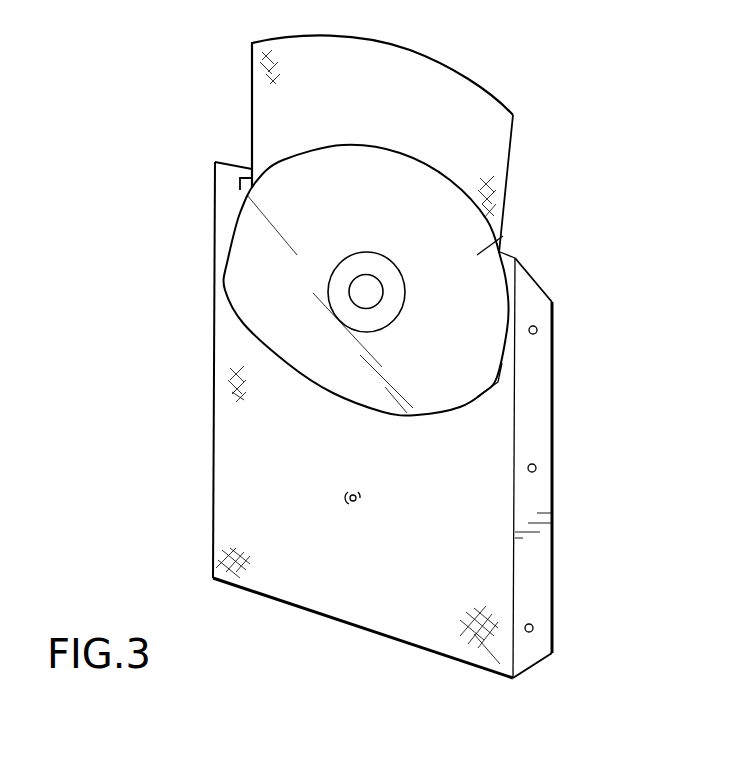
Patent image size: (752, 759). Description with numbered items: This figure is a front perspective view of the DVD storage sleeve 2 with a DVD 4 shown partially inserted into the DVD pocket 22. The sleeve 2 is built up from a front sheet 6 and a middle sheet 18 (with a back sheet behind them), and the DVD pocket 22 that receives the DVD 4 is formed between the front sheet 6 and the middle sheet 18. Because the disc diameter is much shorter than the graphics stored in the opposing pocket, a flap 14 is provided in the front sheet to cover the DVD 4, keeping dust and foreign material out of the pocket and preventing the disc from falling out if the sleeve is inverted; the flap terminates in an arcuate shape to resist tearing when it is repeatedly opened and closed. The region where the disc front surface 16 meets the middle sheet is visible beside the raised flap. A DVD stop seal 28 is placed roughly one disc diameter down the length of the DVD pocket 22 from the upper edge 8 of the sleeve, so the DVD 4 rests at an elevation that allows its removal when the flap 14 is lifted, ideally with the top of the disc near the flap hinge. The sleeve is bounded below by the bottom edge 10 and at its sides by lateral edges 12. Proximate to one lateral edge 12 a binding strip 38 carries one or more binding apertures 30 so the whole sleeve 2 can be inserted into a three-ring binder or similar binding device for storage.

The DVD storage sleeve 2 is at (578, 138).
The DVD disc 4 is at (338, 144).
The front sheet 6 is at (225, 437).
The upper edge 8 is at (228, 162).
The bottom edge 10 is at (248, 592).
The lateral edge 12 is at (213, 365).
The flap 14 is at (467, 73).
The digital video disc front surface 16 is at (495, 233).
The middle sheet 18 is at (242, 190).
The DVD pocket 22 is at (227, 295).
The DVD stop seal 28 is at (358, 503).
The binding aperture 30 is at (537, 330).
The binding strip 38 is at (538, 283).